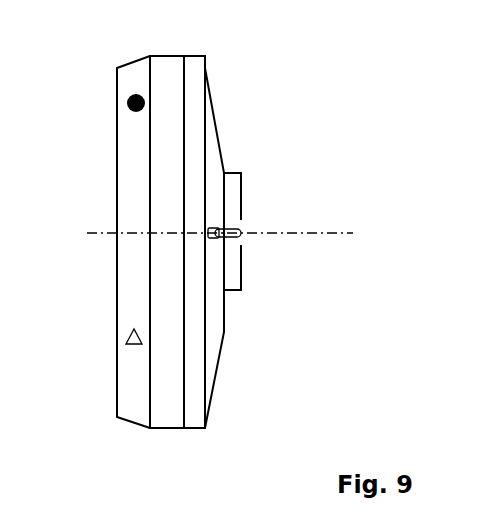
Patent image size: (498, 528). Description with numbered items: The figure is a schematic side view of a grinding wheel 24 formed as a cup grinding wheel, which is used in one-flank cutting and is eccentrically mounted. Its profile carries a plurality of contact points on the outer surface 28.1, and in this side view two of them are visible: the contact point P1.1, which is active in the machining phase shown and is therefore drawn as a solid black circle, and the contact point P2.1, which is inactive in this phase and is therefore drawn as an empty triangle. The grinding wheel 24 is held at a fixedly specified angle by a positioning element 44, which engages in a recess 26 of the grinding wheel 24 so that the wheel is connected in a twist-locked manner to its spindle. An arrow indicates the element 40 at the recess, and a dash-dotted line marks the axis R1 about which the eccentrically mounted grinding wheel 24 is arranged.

The grinding wheel 24 is at (163, 423).
The outer surface 28.1 is at (130, 421).
The contact point P1.1 is at (104, 105).
The contact point P2.1 is at (103, 340).
The positioning element 44 is at (229, 228).
The receiving element 40 is at (242, 241).
The recess 26 is at (209, 239).
The axis of rotation R1 is at (237, 238).